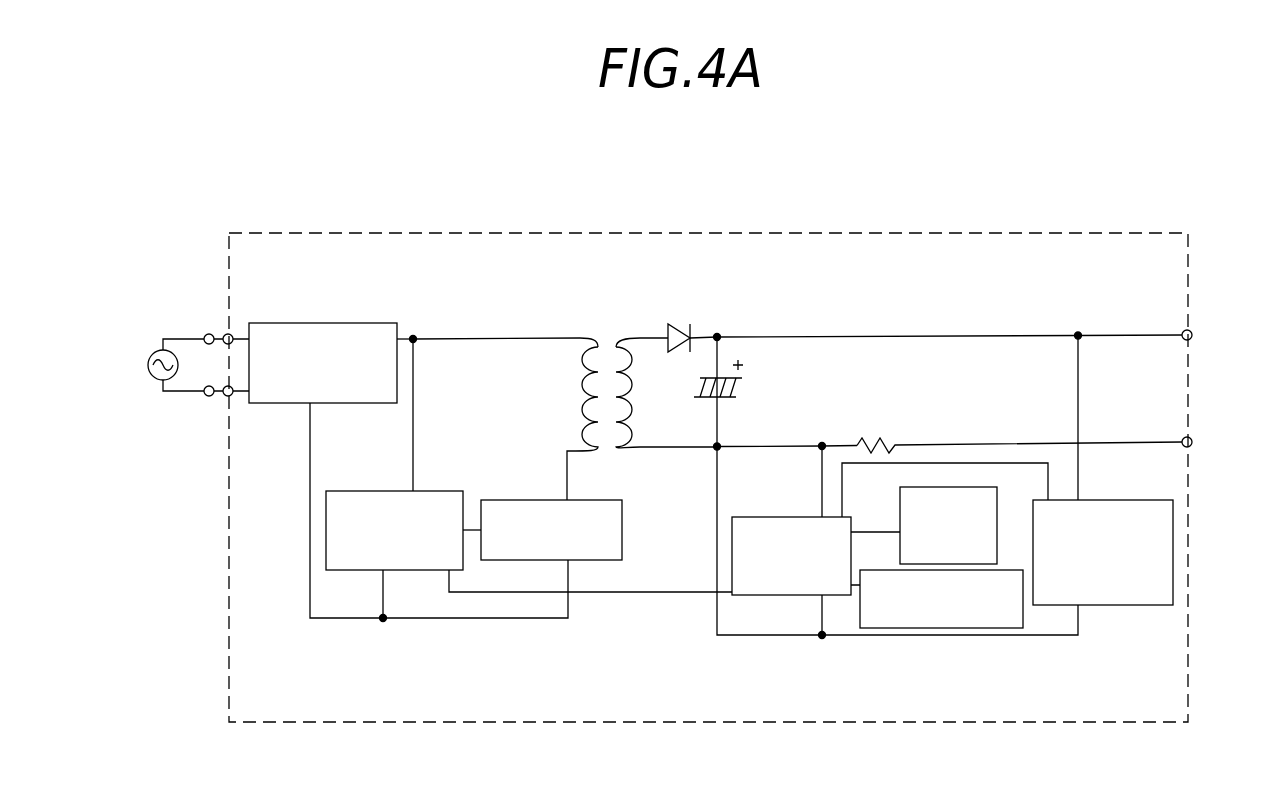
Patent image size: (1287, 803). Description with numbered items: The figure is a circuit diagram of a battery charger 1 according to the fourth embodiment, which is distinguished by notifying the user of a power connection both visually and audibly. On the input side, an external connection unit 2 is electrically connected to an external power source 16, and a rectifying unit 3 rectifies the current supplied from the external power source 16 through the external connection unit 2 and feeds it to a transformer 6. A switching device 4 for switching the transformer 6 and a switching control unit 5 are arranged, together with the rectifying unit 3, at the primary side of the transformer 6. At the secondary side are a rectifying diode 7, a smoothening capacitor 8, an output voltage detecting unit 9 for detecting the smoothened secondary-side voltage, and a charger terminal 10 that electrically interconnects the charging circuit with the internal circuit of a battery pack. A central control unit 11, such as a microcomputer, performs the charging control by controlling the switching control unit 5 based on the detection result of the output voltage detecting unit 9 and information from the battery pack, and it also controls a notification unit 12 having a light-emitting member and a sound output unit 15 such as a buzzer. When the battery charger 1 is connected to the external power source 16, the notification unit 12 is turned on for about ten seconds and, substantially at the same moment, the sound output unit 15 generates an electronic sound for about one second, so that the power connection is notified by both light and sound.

The battery charger 1 is at (852, 222).
The external connection unit 2 is at (224, 333).
The rectifying unit 3 is at (306, 322).
The switching device 4 is at (530, 499).
The switching control unit 5 is at (437, 490).
The transformer 6 is at (607, 350).
The rectifying diode 7 is at (679, 321).
The smoothening capacitor 8 is at (744, 384).
The output voltage detecting unit 9 is at (1105, 607).
The charger terminal 10 is at (1192, 333).
The central control unit 11 is at (731, 536).
The notification unit 12 is at (913, 630).
The sound output unit 15 is at (950, 486).
The external power source 16 is at (159, 353).